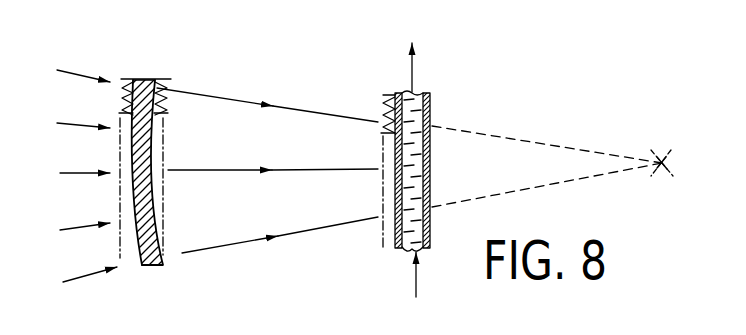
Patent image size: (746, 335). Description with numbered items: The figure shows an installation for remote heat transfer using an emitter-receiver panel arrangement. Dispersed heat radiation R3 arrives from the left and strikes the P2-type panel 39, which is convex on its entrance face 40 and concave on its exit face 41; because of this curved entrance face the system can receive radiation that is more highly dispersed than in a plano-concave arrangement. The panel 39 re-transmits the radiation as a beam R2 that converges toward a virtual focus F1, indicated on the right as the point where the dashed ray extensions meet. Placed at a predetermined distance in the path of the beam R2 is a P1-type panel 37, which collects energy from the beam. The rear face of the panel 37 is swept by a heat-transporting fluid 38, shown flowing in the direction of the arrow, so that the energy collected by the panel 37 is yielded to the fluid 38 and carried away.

The heat radiation R3 is at (72, 72).
The P2-type panel 39 is at (153, 161).
The entrance face 40 is at (138, 258).
The exit face 41 is at (152, 236).
The beam R2 is at (290, 107).
The P1-type panel 37 is at (395, 253).
The heat-transporting fluid 38 is at (413, 67).
The virtual focus F1 is at (661, 155).